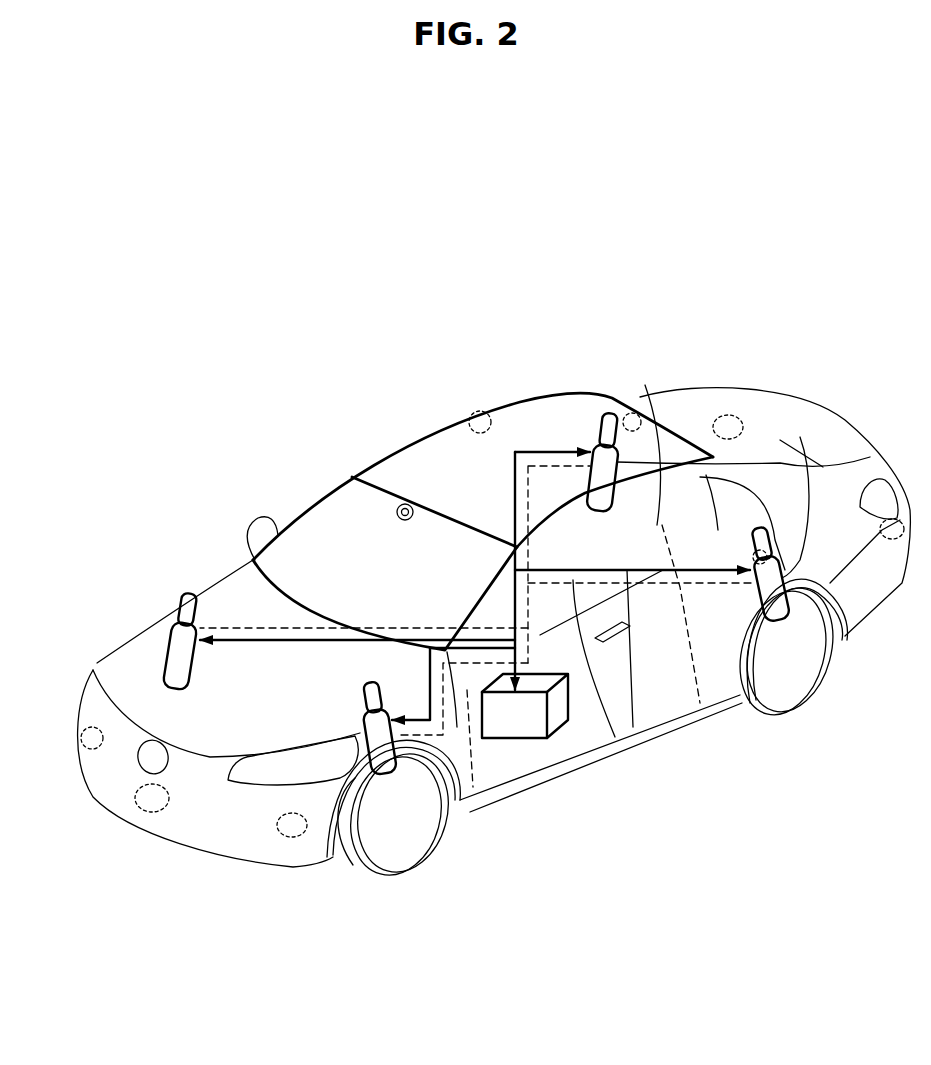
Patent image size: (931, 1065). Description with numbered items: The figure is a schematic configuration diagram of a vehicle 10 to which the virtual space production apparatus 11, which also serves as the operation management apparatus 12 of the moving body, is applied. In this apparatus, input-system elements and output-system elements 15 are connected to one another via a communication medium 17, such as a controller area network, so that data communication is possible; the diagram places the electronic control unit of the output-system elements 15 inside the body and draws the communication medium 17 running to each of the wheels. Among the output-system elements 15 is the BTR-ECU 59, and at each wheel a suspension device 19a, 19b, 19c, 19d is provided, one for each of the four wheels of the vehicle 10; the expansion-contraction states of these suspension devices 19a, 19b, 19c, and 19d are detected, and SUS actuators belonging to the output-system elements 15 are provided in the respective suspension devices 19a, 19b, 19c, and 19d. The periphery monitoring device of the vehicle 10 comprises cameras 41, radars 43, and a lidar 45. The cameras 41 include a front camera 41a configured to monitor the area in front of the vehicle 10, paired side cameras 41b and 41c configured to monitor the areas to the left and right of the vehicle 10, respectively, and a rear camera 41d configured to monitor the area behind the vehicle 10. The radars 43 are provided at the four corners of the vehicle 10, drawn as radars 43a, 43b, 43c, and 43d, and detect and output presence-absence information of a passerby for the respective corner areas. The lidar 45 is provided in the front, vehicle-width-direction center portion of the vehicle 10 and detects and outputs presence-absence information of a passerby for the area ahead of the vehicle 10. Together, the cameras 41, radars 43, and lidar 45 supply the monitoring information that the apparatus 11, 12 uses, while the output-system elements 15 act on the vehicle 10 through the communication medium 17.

The vehicle 10 is at (455, 413).
The virtual space production apparatus 11 is at (385, 593).
The operation management apparatus 12 is at (448, 590).
The output-system elements 15 is at (515, 742).
The communication medium 17 is at (700, 703).
The suspension device 19a is at (360, 762).
The suspension device 19b is at (165, 657).
The suspension device 19c is at (789, 565).
The suspension device 19d is at (630, 458).
The BTR-ECU 59 is at (461, 632).
The cameras 41 is at (582, 427).
The front camera 41a is at (410, 505).
The side camera 41b is at (752, 552).
The side camera 41c is at (483, 410).
The rear camera 41d is at (632, 412).
The radars 43 is at (469, 638).
The radar 43a is at (278, 830).
The radar 43b is at (83, 748).
The radar 43c is at (891, 519).
The radar 43d is at (743, 420).
The lidar 45 is at (138, 808).